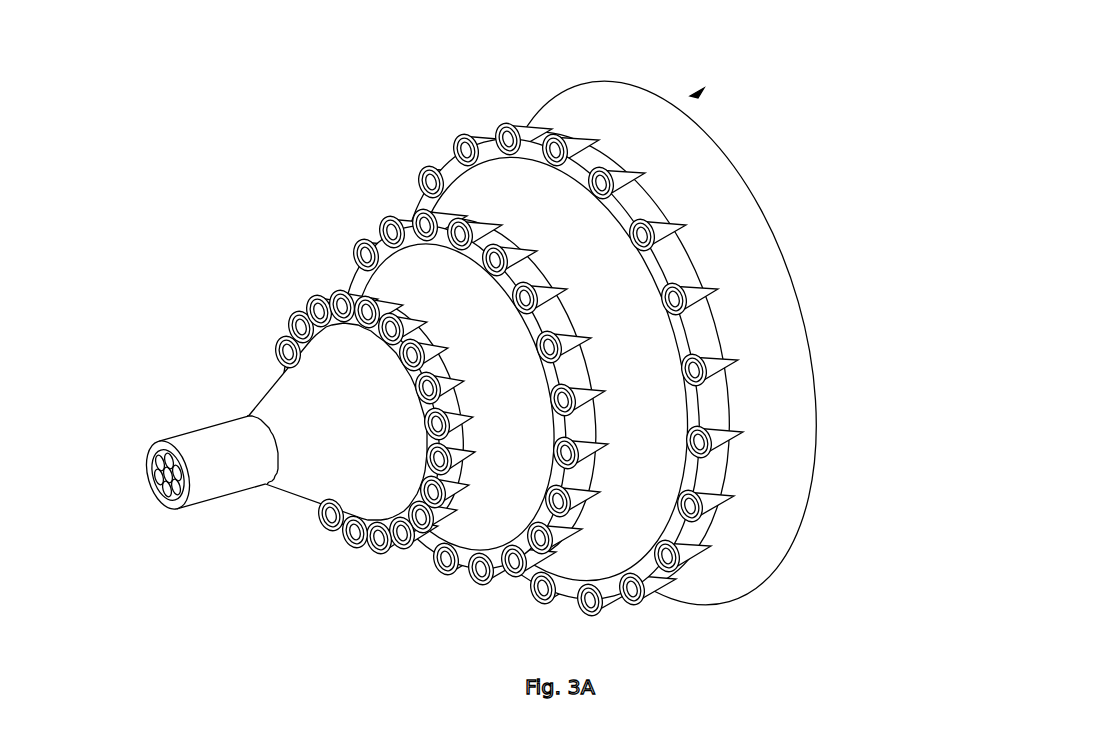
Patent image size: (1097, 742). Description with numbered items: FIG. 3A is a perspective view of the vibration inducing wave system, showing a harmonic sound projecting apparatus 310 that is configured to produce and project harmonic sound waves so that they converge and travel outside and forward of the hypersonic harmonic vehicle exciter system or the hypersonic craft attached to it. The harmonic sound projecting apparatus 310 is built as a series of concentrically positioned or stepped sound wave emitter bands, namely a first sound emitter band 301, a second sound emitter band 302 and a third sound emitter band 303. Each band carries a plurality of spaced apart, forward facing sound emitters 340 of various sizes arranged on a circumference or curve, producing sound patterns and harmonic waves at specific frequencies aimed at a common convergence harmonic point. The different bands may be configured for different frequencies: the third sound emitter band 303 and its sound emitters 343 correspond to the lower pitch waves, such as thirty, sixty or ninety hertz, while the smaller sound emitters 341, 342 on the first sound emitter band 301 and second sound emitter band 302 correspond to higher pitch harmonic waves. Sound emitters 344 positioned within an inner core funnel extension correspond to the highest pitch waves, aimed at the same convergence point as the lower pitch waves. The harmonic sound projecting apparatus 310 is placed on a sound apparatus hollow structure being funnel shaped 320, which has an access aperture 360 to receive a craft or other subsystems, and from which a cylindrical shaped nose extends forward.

The first sound emitter band 301 is at (546, 433).
The second sound emitter band 302 is at (467, 382).
The third sound emitter band 303 is at (563, 348).
The harmonic sound projecting apparatus 310 is at (694, 94).
The sound apparatus hollow structure being funnel shaped 320 is at (318, 486).
The sound emitters 340 is at (167, 501).
The sound emitters 341 is at (320, 310).
The sound emitters 342 is at (403, 222).
The sound emitters 343 is at (492, 130).
The sound emitters 344 is at (150, 464).
The access aperture 360 is at (480, 328).